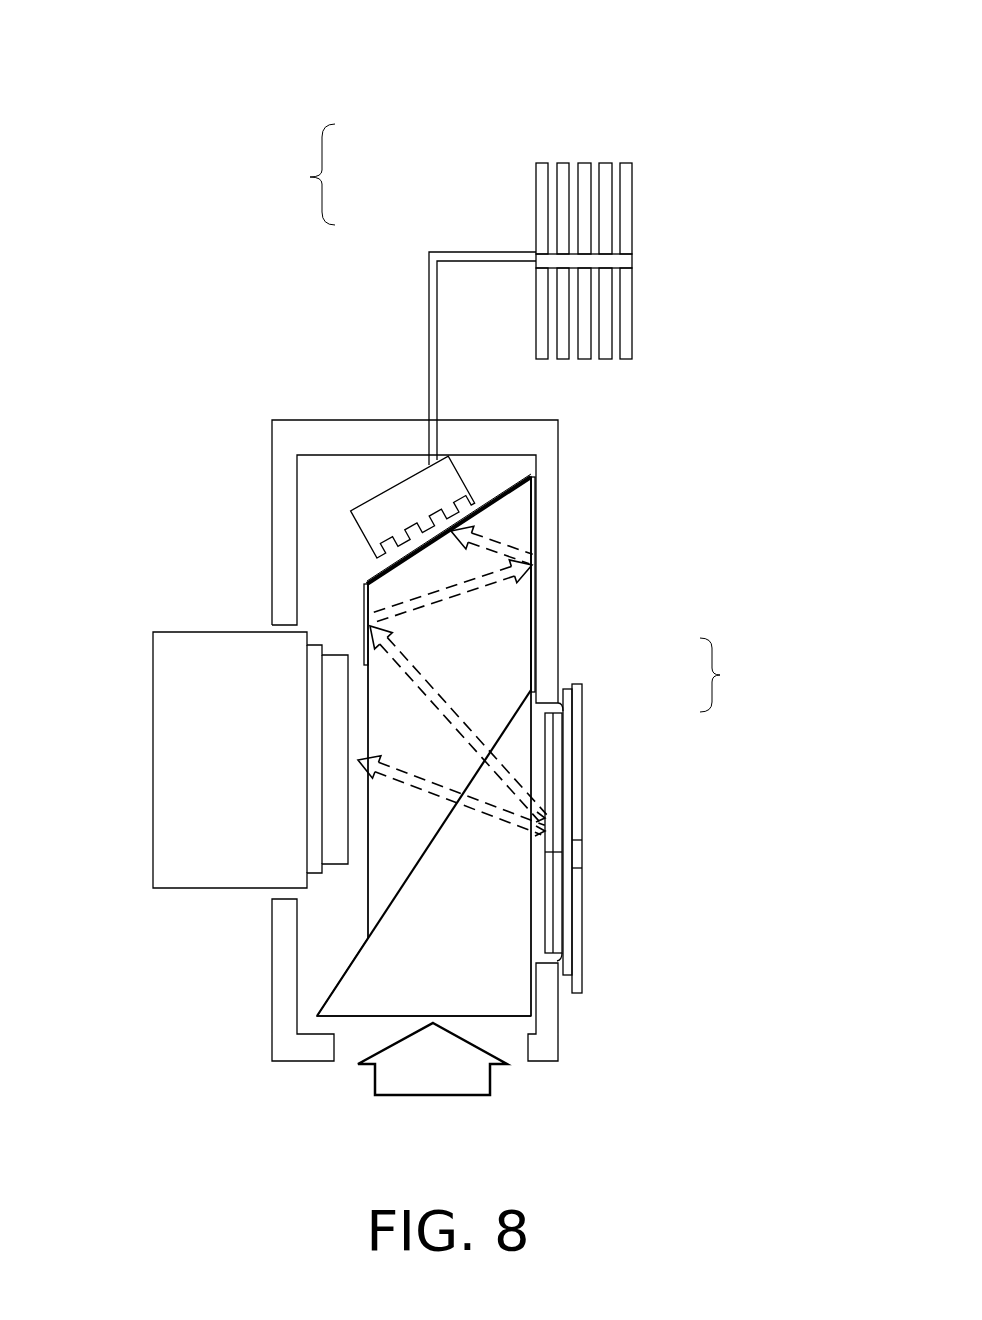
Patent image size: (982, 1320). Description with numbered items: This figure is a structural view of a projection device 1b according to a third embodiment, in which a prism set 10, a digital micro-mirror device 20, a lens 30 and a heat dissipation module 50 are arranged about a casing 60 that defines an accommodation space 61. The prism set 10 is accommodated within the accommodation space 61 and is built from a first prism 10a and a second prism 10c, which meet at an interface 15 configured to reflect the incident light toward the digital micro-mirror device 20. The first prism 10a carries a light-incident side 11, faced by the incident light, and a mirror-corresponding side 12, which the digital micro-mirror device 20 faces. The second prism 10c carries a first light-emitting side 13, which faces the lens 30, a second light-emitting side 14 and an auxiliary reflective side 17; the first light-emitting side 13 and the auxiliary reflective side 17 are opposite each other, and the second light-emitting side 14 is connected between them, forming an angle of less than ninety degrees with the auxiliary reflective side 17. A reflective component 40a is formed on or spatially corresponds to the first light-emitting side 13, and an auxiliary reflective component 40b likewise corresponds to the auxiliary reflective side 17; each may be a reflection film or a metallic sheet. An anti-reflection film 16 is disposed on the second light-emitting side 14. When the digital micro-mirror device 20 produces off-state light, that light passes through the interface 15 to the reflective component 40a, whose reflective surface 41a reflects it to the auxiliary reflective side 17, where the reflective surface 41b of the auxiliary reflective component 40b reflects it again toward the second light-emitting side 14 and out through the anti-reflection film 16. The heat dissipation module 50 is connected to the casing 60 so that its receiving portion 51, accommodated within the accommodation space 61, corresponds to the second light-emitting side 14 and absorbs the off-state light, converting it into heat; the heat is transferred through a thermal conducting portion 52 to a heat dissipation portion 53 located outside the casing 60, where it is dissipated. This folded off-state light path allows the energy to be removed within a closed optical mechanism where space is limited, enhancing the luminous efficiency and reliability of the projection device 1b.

The projection device 1b is at (822, 55).
The prism set 10 is at (457, 800).
The first prism 10a is at (518, 752).
The second prism 10c is at (497, 697).
The light-incident side 11 is at (417, 1017).
The mirror-corresponding side 12 is at (531, 853).
The first light-emitting side 13 is at (368, 885).
The second light-emitting side 14 is at (508, 487).
The interface 15 is at (430, 855).
The anti-reflection film 16 is at (408, 555).
The auxiliary reflective side 17 is at (533, 583).
The digital micro-mirror device 20 is at (577, 828).
The lens 30 is at (218, 752).
The reflective component 40a is at (362, 622).
The auxiliary reflective component 40b is at (535, 513).
The reflective surface 41a is at (373, 605).
The reflective surface 41b is at (533, 503).
The heat dissipation module 50 is at (451, 339).
The receiving portion 51 is at (420, 488).
The thermal conducting portion 52 is at (467, 257).
The heat dissipation portion 53 is at (542, 208).
The casing 60 is at (282, 507).
The accommodation space 61 is at (318, 482).